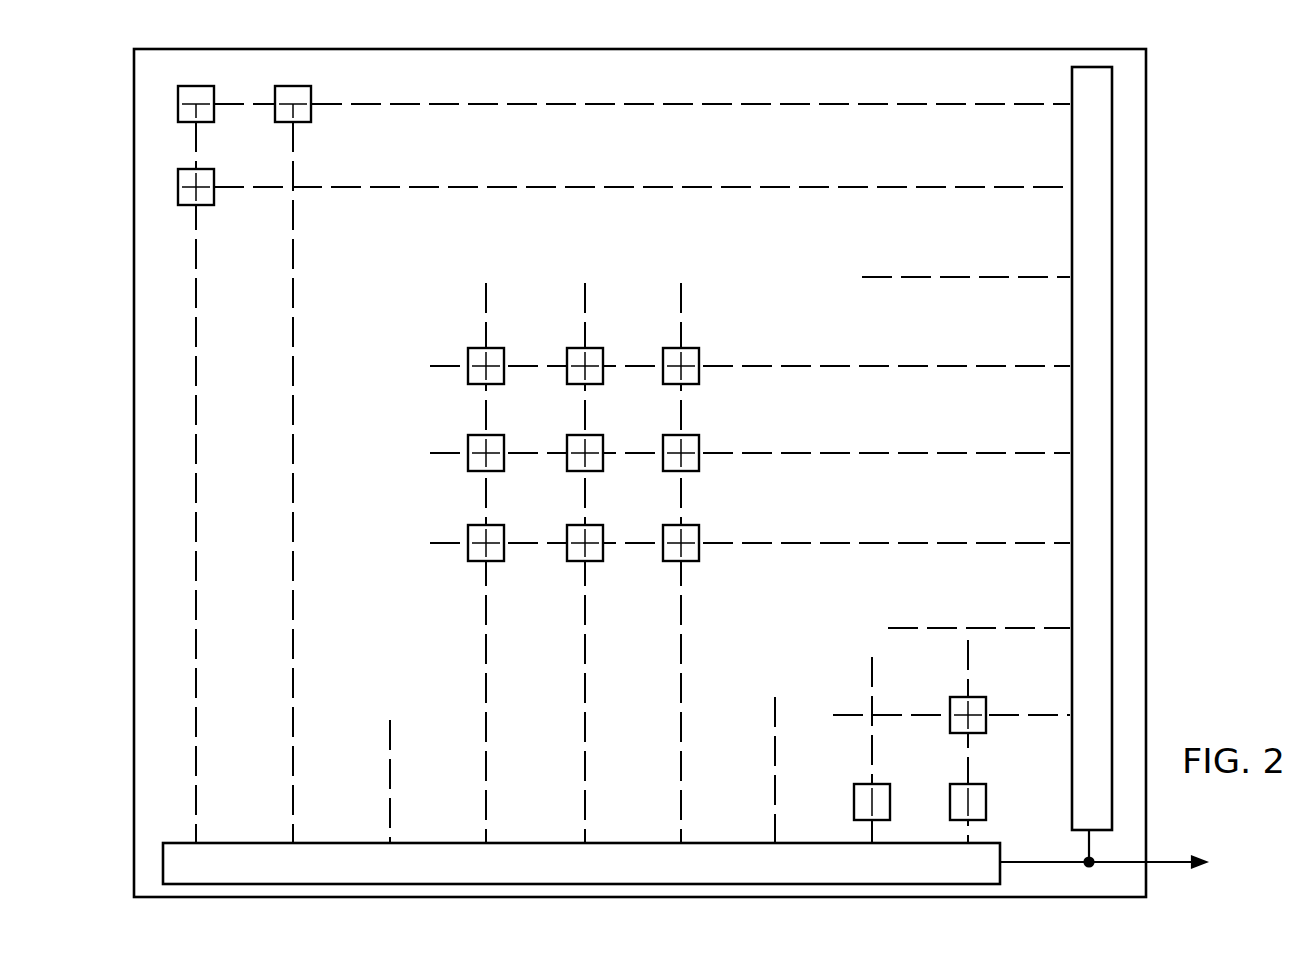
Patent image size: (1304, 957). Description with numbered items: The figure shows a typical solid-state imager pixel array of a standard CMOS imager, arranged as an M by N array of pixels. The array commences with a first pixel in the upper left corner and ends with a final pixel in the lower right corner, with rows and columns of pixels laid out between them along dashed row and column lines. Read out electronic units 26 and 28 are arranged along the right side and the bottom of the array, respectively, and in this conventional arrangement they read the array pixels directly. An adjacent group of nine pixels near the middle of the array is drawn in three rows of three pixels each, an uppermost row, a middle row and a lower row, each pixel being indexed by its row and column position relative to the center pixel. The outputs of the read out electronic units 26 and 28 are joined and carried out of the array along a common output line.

The read out electronic unit 26 is at (1106, 428).
The read out electronic unit 28 is at (602, 876).